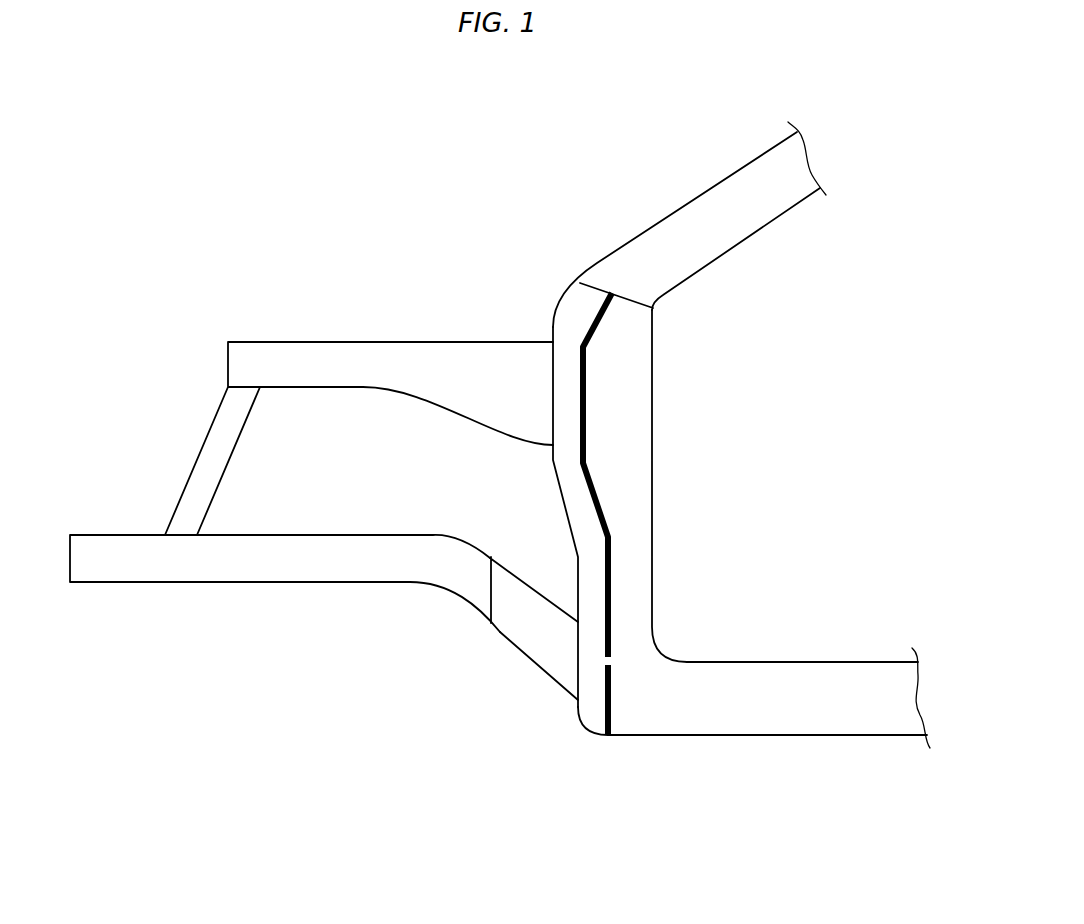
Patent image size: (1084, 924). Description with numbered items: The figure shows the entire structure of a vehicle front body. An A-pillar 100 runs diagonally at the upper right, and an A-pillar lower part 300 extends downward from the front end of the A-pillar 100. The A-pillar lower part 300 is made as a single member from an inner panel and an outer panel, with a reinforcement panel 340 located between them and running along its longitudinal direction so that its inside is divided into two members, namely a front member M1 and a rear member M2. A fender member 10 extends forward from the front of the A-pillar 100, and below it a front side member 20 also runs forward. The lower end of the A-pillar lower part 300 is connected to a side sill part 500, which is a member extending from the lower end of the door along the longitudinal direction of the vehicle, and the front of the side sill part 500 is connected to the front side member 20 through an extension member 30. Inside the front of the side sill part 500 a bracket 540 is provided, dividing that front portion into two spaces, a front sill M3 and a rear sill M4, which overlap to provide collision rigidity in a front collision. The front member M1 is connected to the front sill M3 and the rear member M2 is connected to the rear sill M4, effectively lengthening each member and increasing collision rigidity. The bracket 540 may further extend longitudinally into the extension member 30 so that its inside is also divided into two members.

The fender member 10 is at (362, 345).
The front side member 20 is at (230, 575).
The extension member 30 is at (533, 632).
The A-pillar 100 is at (723, 213).
The A-pillar lower part 300 is at (667, 455).
The reinforcement panel 340 is at (607, 520).
The side sill part 500 is at (702, 755).
The bracket 540 is at (610, 708).
The front member M1 is at (571, 378).
The rear member M2 is at (612, 380).
The front sill M3 is at (593, 699).
The rear sill M4 is at (646, 702).